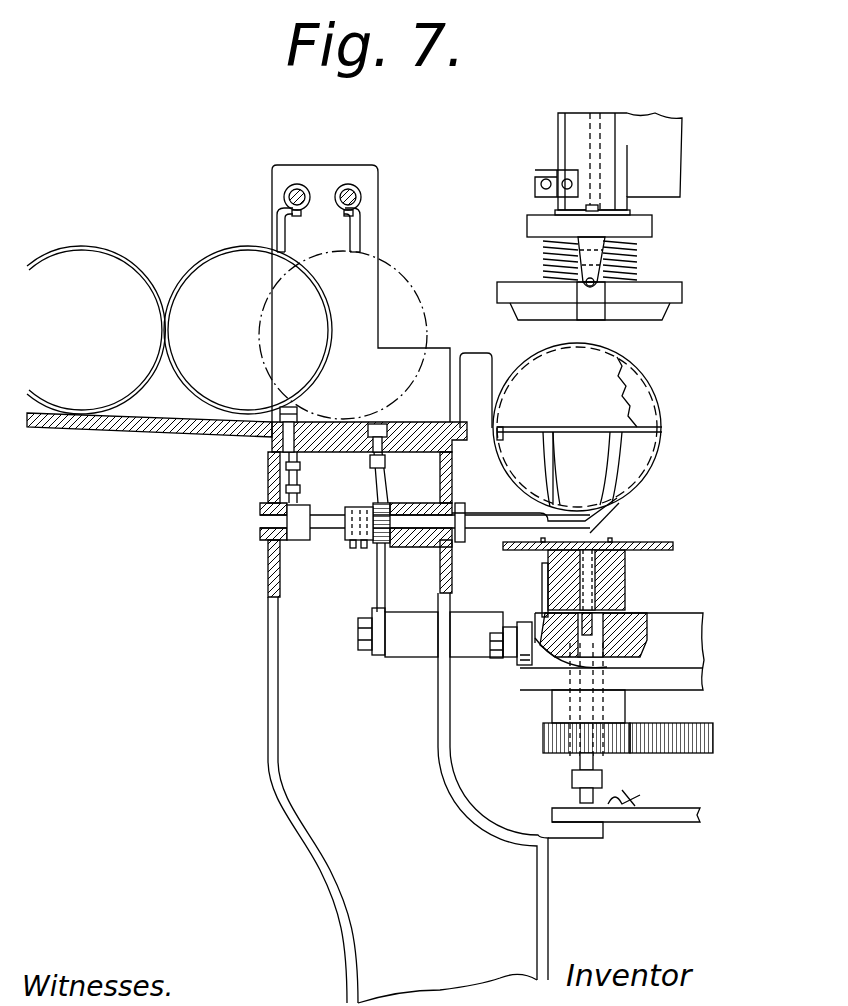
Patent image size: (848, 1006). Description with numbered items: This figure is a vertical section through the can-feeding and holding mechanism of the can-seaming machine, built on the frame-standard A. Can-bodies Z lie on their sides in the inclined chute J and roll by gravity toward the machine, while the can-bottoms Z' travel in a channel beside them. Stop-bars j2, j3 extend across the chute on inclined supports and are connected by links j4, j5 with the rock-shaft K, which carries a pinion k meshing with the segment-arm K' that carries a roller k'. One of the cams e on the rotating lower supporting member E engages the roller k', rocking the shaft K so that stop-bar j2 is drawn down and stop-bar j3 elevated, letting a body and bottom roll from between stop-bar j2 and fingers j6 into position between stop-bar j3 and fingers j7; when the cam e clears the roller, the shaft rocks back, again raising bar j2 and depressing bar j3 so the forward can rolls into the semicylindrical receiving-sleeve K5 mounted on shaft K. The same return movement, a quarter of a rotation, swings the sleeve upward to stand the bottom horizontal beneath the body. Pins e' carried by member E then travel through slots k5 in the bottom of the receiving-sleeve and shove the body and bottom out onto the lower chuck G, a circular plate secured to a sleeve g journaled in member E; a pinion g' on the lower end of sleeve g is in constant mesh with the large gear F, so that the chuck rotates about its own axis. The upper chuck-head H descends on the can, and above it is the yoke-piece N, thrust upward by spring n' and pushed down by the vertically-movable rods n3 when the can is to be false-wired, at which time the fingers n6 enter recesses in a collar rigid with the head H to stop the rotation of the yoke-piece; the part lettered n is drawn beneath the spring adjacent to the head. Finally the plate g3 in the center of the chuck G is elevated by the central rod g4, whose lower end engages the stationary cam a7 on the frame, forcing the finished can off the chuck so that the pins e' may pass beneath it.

The can body Z is at (353, 378).
The can bottom Z' is at (606, 392).
The chute J is at (343, 335).
The stop-bar j2 is at (300, 412).
The stop-bar j3 is at (386, 423).
The link j4 is at (297, 473).
The link j5 is at (372, 483).
The fingers j6 is at (277, 213).
The fingers j7 is at (363, 240).
The rock-shaft K is at (439, 529).
The segment-arm K' is at (415, 600).
The pinion k is at (387, 506).
The roller k' is at (511, 627).
The semicylindrical receiving-sleeve K5 is at (641, 458).
The slots k5 is at (607, 457).
The lower holding-chuck G is at (601, 544).
The sleeve g is at (600, 580).
The plate g3 is at (631, 546).
The pinion g' is at (565, 744).
The central rod g4 is at (596, 763).
The cam e is at (571, 655).
The pins e' is at (567, 563).
The lower horizontal supporting member E is at (612, 686).
The large gear F is at (671, 754).
The stationary cam a7 is at (624, 814).
The frame-standard A is at (408, 798).
The yoke-piece N is at (660, 245).
The block n is at (591, 301).
The spring n' is at (608, 261).
The vertically-movable rods n3 is at (598, 210).
The downwardly-projecting fingers n6 is at (606, 298).
The upper holding-chuck H is at (604, 301).